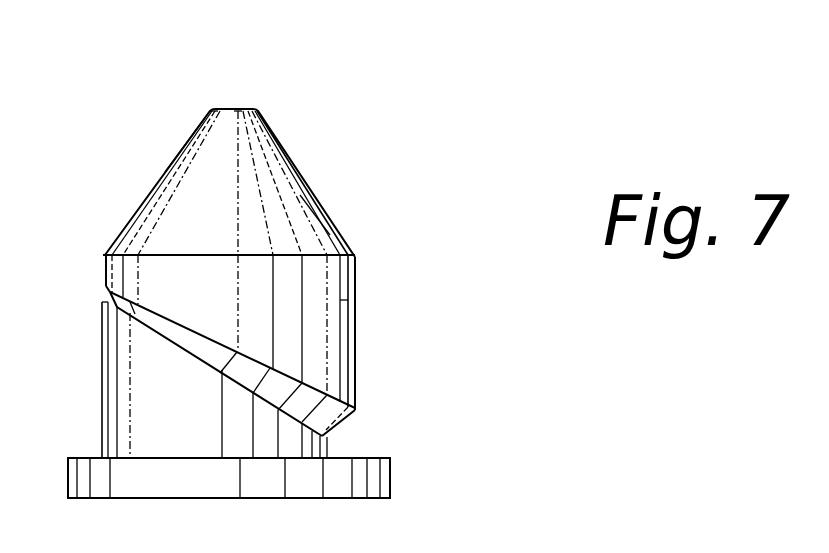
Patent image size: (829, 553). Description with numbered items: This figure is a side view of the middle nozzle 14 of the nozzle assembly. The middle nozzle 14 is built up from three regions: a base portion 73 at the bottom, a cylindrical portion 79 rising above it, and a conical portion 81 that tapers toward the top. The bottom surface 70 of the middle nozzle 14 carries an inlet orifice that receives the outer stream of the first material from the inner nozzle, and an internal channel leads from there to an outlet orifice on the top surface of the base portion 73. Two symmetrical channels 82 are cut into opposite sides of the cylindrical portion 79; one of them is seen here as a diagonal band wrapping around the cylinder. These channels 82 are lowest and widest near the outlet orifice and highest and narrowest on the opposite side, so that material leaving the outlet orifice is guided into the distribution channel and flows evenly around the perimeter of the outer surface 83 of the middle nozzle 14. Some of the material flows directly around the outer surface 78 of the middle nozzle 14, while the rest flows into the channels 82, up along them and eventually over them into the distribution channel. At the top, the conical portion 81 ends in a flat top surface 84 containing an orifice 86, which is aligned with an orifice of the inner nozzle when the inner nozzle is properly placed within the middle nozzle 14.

The middle nozzle 14 is at (295, 166).
The bottom surface 70 is at (83, 499).
The base portion 73 is at (370, 478).
The outer surface 78 is at (356, 285).
The cylindrical portion 79 is at (340, 340).
The conical portion 81 is at (165, 198).
The symmetrical channels 82 is at (165, 327).
The outer surface 83 is at (303, 215).
The top surface 84 is at (216, 108).
The orifice 86 is at (235, 101).